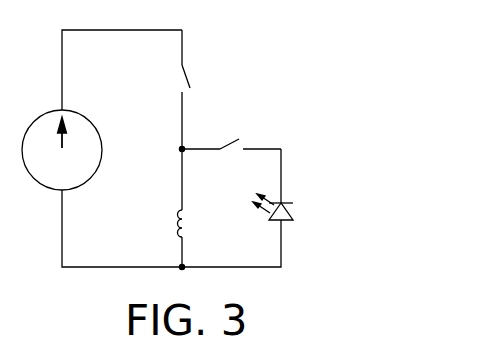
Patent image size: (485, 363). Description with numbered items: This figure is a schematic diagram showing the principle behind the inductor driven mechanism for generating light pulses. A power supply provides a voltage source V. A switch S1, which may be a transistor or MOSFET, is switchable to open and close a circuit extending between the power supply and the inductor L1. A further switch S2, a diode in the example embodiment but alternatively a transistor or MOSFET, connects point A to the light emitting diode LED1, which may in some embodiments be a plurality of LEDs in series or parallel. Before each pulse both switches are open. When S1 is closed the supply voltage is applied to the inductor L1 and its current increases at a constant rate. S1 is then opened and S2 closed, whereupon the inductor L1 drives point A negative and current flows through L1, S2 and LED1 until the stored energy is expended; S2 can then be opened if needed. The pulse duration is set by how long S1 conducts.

The voltage source V is at (62, 150).
The switch S1 is at (170, 60).
The further switch S2 is at (231, 134).
The point A is at (173, 150).
The inductor L1 is at (165, 223).
The light emitting diode LED1 is at (260, 232).